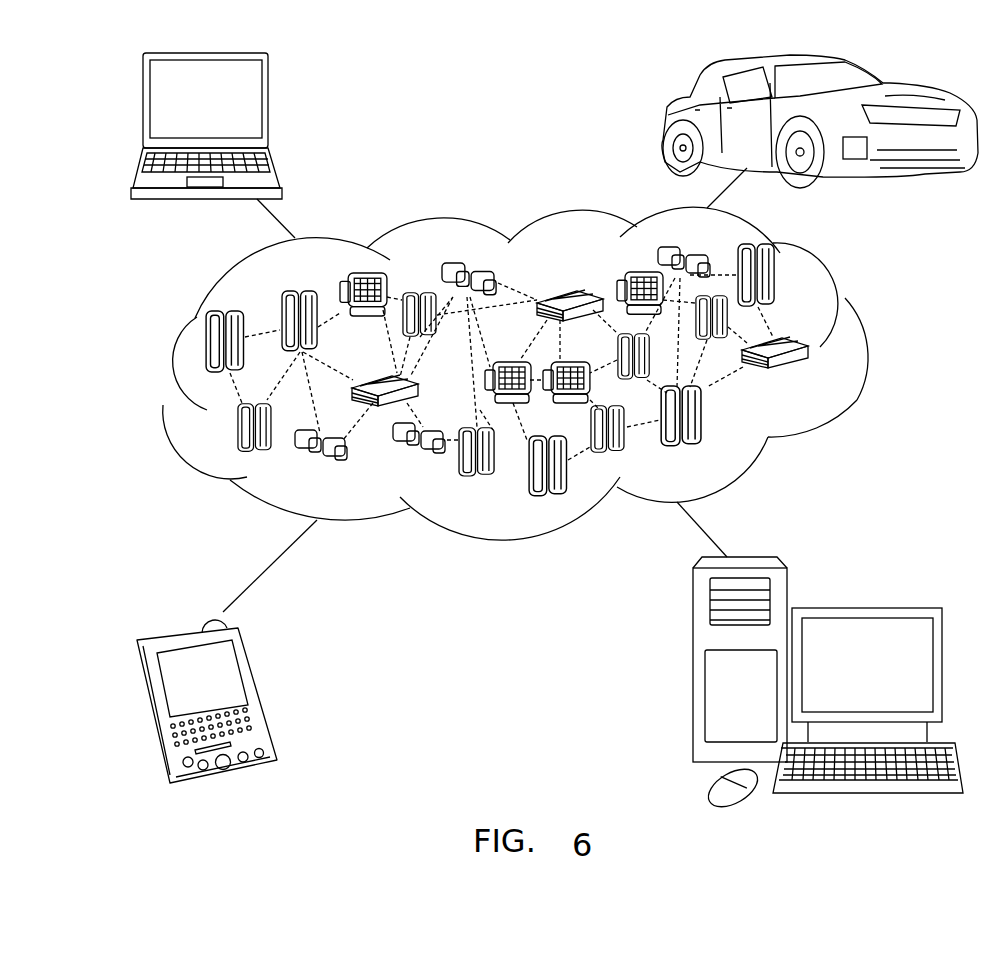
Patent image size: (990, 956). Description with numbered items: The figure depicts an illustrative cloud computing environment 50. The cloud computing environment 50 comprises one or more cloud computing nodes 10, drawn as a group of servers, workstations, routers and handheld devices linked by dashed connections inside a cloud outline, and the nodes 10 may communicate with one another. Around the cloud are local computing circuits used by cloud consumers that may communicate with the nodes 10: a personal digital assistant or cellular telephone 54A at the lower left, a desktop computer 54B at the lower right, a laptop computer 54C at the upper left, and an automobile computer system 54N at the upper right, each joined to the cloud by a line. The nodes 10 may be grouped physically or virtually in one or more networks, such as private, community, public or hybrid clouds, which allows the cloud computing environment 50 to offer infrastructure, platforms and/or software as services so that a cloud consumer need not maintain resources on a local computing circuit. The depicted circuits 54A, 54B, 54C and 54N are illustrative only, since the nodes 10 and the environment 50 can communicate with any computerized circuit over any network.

The cloud computing nodes 10 is at (816, 378).
The cloud computing environment 50 is at (867, 352).
The personal digital assistant or cellular telephone 54A is at (258, 692).
The desktop computer 54B is at (862, 607).
The laptop computer 54C is at (268, 108).
The automobile computer system 54N is at (667, 122).